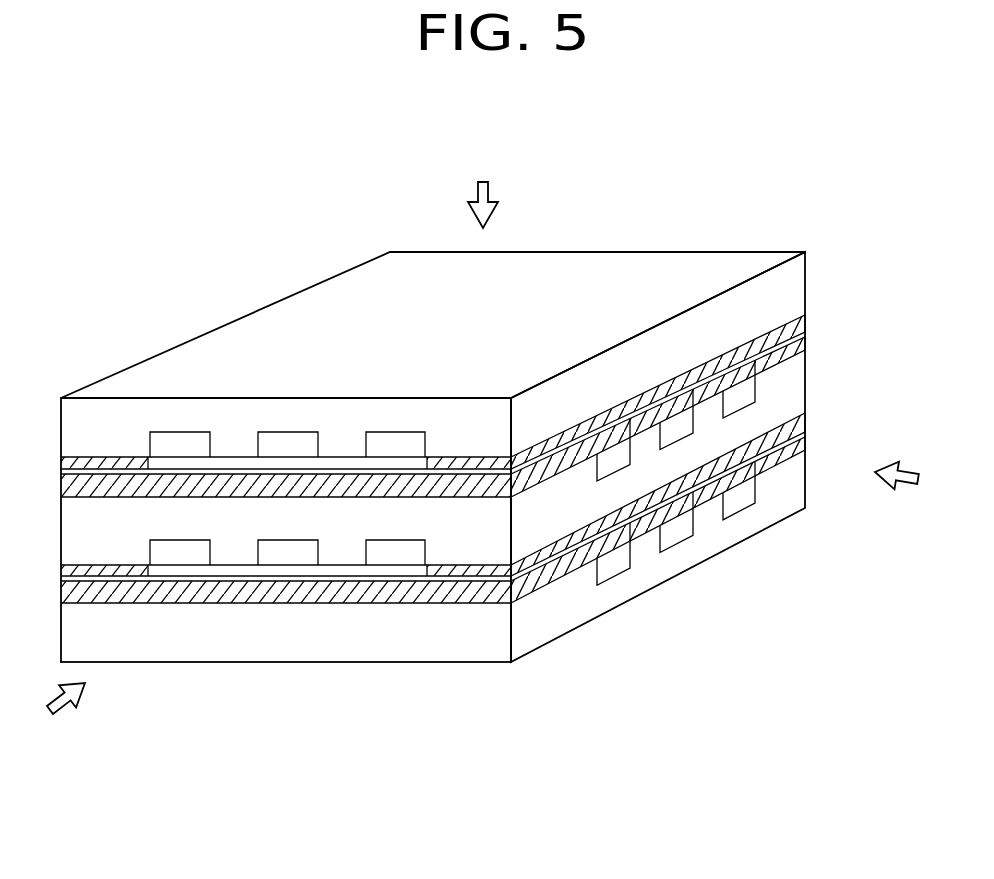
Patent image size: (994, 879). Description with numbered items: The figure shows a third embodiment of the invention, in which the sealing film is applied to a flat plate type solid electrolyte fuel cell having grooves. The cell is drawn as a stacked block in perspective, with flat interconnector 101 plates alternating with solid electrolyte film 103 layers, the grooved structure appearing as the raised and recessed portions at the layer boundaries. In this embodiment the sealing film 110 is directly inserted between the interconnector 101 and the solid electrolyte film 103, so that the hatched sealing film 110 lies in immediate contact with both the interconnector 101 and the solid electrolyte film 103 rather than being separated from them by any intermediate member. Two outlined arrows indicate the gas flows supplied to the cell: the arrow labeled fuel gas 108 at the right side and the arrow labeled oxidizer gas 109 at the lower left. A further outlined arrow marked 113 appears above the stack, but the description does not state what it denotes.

The interconnector 101 is at (630, 272).
The solid electrolyte film 103 is at (805, 330).
The sealing film 110 is at (805, 313).
The fuel gas 108 is at (905, 492).
The oxidizer gas 109 is at (64, 711).
The direction arrow 113 is at (488, 194).